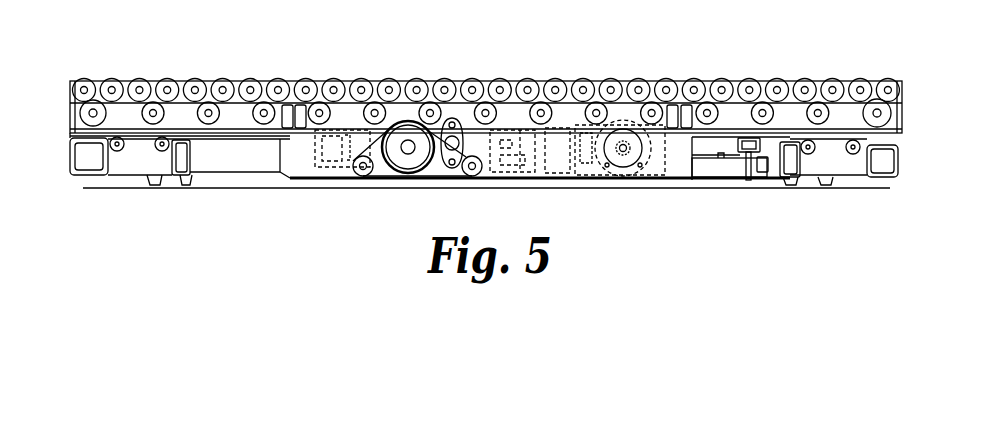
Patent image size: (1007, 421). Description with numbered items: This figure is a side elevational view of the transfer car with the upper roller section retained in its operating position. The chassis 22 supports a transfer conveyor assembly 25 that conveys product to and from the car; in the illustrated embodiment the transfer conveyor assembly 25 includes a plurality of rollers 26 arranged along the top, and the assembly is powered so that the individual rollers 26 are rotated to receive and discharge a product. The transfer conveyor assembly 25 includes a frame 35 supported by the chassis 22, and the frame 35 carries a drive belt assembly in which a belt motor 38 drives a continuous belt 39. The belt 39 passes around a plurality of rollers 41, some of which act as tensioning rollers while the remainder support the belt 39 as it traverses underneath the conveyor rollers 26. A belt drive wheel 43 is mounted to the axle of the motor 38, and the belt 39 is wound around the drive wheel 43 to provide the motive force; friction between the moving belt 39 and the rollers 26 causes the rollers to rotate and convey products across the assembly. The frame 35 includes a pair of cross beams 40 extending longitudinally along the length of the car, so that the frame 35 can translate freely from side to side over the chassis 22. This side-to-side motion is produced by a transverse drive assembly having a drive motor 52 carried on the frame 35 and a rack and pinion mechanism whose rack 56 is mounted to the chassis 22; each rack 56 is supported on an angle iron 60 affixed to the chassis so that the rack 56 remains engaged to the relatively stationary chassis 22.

The chassis 22 is at (138, 180).
The transfer conveyor assembly 25 is at (750, 72).
The rollers 26 is at (553, 80).
The frame 35 is at (70, 105).
The belt motor 38 is at (340, 148).
The continuous belt 39 is at (70, 125).
The cross beams 40 is at (297, 105).
The rollers 41 is at (173, 112).
The belt drive wheel 43 is at (410, 160).
The drive motor 52 is at (627, 168).
The rack 56 is at (703, 163).
The angle iron 60 is at (773, 168).